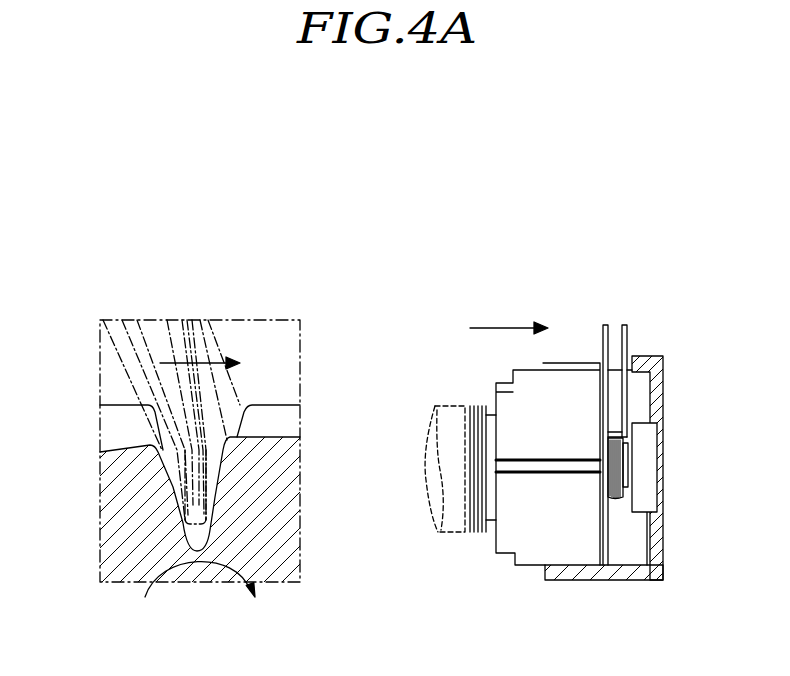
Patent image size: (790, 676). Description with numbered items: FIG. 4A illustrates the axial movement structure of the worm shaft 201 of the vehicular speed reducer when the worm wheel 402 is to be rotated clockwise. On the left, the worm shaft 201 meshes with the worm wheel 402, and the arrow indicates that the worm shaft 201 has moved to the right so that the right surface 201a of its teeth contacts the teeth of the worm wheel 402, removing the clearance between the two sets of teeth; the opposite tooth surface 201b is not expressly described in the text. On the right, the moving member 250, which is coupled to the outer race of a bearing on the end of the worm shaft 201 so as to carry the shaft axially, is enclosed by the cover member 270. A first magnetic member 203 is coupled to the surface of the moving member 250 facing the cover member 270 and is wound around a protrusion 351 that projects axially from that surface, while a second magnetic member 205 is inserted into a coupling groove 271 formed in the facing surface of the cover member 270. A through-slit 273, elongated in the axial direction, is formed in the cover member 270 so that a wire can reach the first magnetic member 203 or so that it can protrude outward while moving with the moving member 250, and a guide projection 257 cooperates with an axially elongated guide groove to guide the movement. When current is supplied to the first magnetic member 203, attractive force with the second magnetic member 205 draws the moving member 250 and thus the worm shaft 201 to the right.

The worm shaft 201 is at (118, 362).
The right surface of the teeth of the worm shaft 201a is at (207, 455).
The blade edge 201b is at (160, 492).
The worm wheel 402 is at (100, 533).
The moving member 250 is at (563, 385).
The through-slit 273 is at (585, 362).
The guide projection 257 is at (517, 468).
The second magnetic member 205 is at (628, 475).
The protrusion 351 is at (630, 483).
The cover member 270 is at (660, 356).
The coupling groove 271 is at (647, 450).
The first magnetic member 203 is at (605, 483).